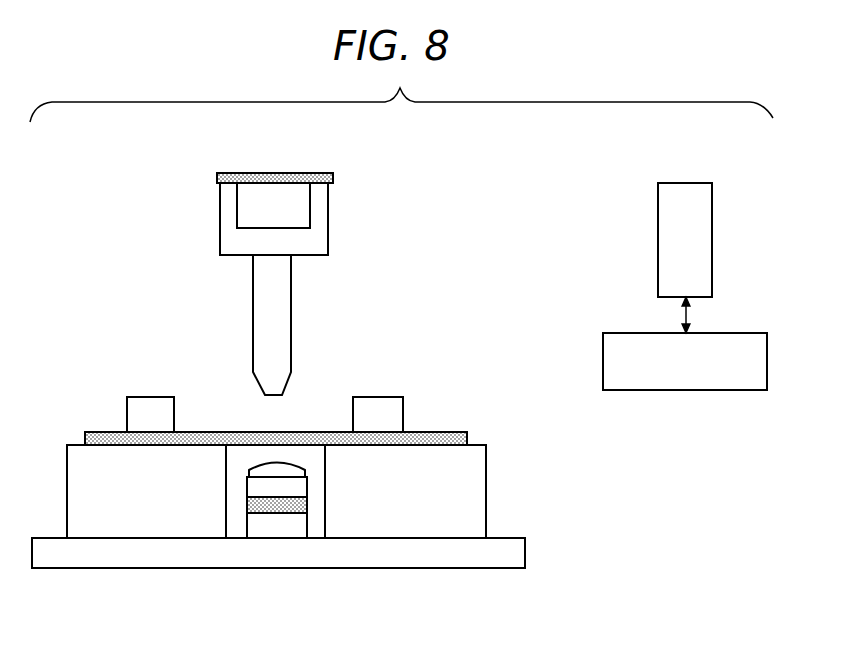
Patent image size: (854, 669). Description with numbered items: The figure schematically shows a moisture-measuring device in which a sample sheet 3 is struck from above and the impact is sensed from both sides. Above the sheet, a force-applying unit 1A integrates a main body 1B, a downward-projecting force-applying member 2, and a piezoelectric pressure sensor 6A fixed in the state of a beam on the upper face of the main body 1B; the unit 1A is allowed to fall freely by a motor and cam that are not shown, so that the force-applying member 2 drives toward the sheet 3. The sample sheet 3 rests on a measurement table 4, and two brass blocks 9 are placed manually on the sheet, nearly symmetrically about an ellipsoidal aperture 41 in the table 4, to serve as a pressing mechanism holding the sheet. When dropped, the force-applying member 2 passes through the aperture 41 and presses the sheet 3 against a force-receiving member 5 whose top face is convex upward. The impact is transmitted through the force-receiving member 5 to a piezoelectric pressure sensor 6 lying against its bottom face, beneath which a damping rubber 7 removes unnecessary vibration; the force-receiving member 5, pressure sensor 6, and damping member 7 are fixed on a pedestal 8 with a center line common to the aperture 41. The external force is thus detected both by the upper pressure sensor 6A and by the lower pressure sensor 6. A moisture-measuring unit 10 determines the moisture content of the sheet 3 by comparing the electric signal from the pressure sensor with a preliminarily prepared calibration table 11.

The force-applying unit 1A is at (331, 274).
The main body 1B is at (321, 216).
The pressure sensor 6A is at (327, 180).
The force-applying member 2 is at (283, 322).
The brass block 9 is at (149, 407).
The sample sheet 3 is at (436, 437).
The measurement table 4 is at (478, 475).
The aperture 41 is at (252, 462).
The force-receiving member 5 is at (252, 487).
The pressure sensor 6 is at (298, 503).
The damping member 7 is at (289, 528).
The pedestal 8 is at (213, 562).
The moisture-measuring unit 10 is at (705, 223).
The calibration table 11 is at (742, 332).